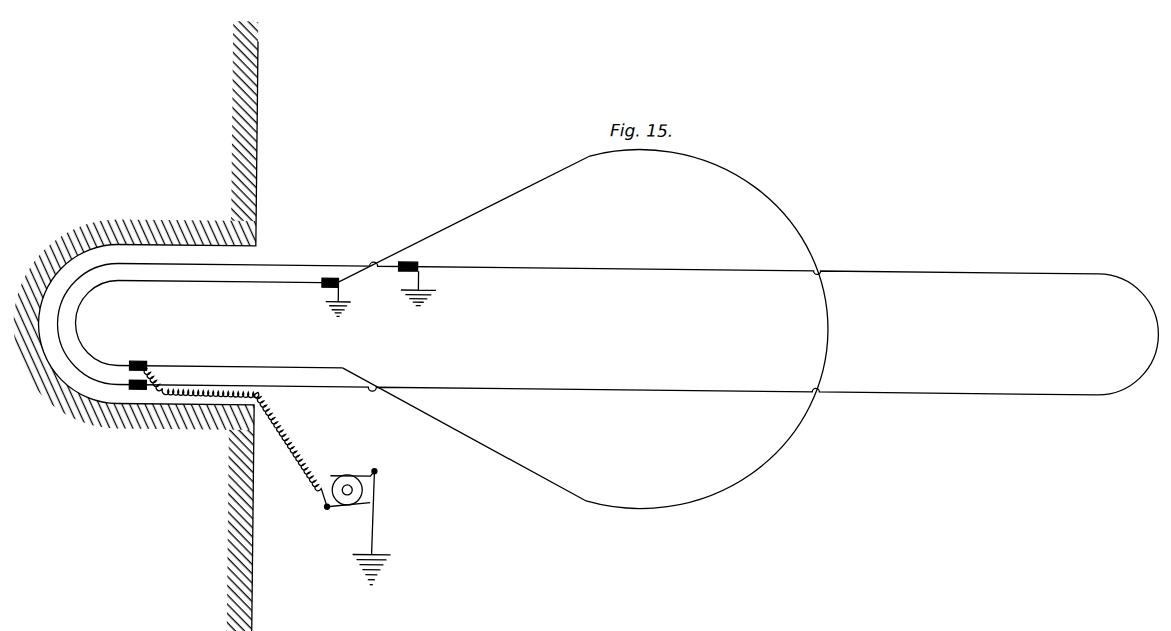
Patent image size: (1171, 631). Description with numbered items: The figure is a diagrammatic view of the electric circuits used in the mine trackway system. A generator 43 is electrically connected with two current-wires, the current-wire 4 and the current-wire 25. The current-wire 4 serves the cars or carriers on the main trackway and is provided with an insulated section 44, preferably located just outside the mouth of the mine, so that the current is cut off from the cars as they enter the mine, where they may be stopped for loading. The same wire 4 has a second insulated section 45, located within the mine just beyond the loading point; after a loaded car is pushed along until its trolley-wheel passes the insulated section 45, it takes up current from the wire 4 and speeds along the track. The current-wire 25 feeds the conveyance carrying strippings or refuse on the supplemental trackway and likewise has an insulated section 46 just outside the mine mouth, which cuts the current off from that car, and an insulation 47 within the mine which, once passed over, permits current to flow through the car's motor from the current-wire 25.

The current-wire 4 is at (649, 264).
The current-wire 25 is at (565, 162).
The generator 43 is at (349, 472).
The insulated section 44 is at (414, 259).
The insulated section 45 is at (130, 384).
The insulated section 46 is at (322, 282).
The insulation 47 is at (146, 356).